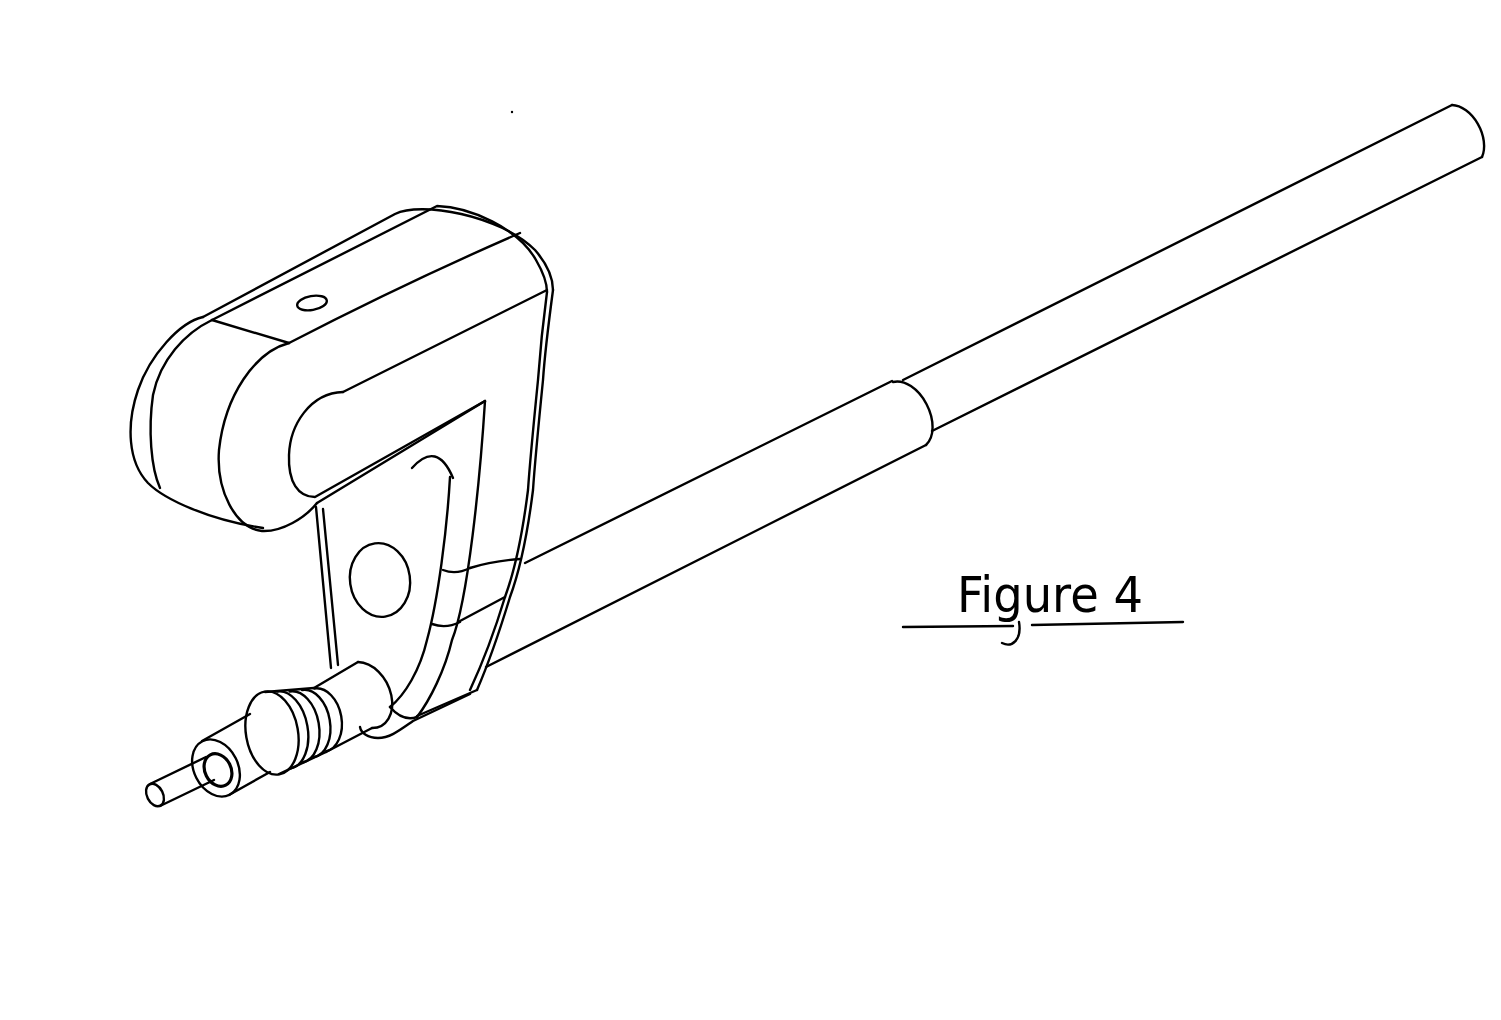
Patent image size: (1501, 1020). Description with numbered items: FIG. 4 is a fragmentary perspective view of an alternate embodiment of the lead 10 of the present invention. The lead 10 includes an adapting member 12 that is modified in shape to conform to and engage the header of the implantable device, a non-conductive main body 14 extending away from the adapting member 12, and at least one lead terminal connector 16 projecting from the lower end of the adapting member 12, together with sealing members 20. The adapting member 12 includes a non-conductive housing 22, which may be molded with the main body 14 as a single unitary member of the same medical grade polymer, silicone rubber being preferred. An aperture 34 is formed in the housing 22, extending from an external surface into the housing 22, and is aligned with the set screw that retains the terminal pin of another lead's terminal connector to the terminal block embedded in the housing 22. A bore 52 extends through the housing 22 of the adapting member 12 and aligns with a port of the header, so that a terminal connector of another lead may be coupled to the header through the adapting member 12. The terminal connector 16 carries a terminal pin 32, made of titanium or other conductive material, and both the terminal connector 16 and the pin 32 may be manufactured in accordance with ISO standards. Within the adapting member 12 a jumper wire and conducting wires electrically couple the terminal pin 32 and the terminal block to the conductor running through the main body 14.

The lead 10 is at (800, 307).
The adapting member 12 is at (495, 278).
The non-conductive main body 14 is at (963, 370).
The lead terminal connector 16 is at (255, 775).
The sealing members 20 is at (320, 747).
The non-conductive housing 22 is at (435, 407).
The terminal pin 32 is at (180, 792).
The aperture 34 is at (312, 297).
The bore 52 is at (368, 578).